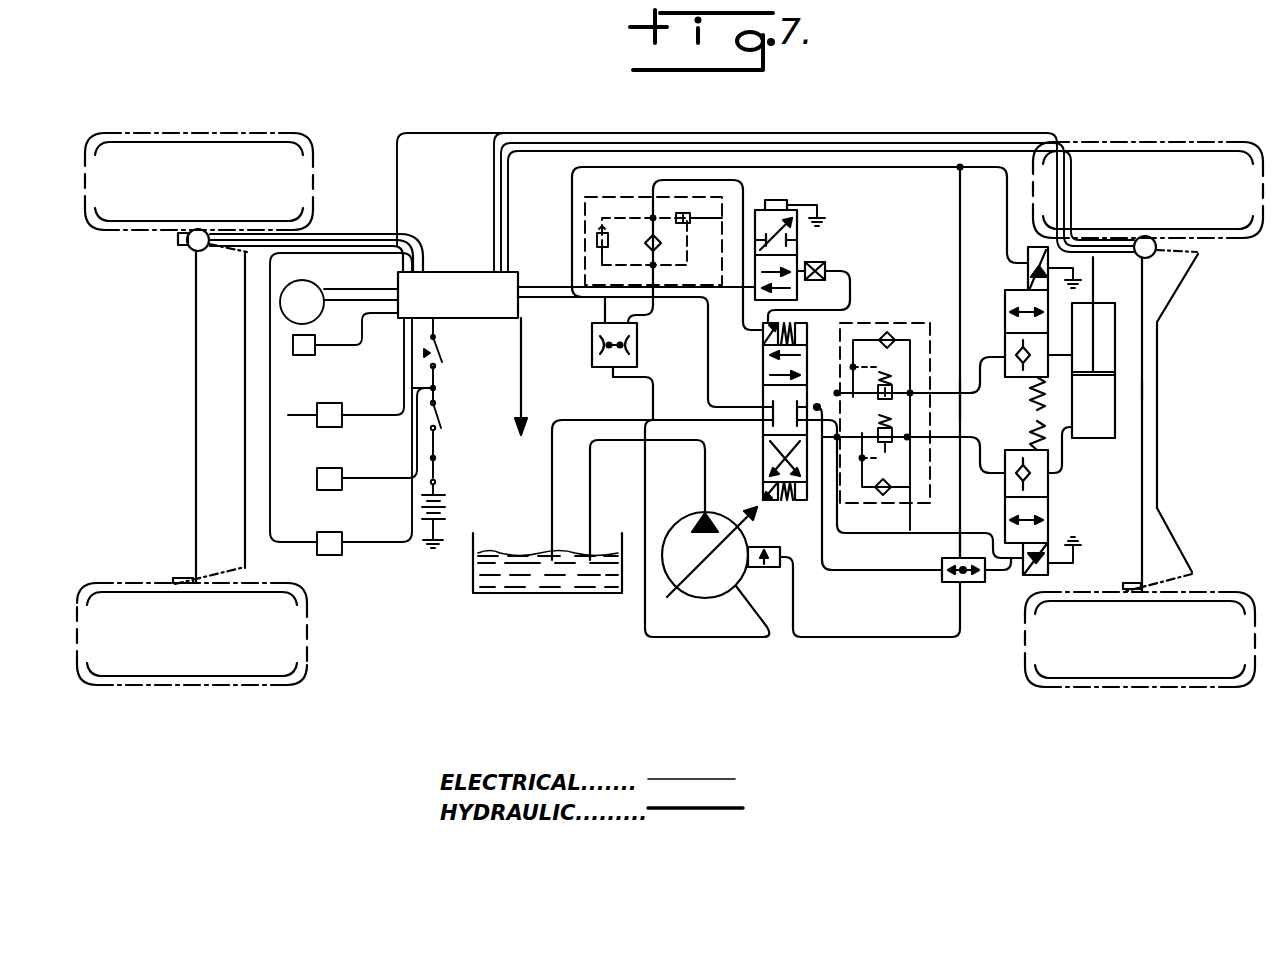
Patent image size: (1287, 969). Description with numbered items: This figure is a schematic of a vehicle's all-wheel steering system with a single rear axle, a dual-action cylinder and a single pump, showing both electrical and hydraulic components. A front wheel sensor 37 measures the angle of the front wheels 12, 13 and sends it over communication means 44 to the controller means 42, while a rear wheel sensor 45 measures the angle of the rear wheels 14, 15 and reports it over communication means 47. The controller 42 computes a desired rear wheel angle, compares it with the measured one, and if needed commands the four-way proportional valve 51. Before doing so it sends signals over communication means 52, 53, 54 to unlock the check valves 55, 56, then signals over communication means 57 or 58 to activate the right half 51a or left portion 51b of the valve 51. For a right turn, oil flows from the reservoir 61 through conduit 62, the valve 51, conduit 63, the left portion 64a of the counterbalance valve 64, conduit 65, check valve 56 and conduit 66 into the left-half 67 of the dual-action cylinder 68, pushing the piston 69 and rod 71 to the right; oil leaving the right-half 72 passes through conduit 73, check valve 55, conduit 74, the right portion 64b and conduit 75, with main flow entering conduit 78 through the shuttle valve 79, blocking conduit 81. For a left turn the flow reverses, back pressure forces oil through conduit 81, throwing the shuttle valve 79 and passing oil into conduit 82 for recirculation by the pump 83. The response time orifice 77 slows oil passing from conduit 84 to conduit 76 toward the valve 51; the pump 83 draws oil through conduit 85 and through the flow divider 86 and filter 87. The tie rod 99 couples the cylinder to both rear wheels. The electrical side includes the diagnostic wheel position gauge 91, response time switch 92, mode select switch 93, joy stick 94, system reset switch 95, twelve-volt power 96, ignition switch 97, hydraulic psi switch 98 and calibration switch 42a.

The front wheel 12 is at (238, 133).
The front wheel 13 is at (218, 675).
The rear wheel 14 is at (1178, 150).
The rear wheel 15 is at (1158, 675).
The front wheel sensor 37 is at (182, 254).
The controller means 42 is at (483, 270).
The calibration switch 42a is at (303, 355).
The communication means 44 is at (375, 233).
The rear wheel sensor 45 is at (1180, 258).
The communication means 47 is at (995, 140).
The four-way proportional valve 51 is at (763, 365).
The right half of four-way valve 51a is at (812, 330).
The left portion of four-way valve 51b is at (763, 496).
The communication means 52 is at (905, 170).
The communication means 53 is at (1003, 200).
The communication means 54 is at (958, 250).
The check valve 55 is at (1005, 290).
The check valve 56 is at (1050, 505).
The communication means 57 is at (556, 287).
The communication means 58 is at (552, 304).
The reservoir 61 is at (588, 595).
The conduit 62 is at (605, 420).
The conduit 63 is at (832, 534).
The counterbalance valve 64 is at (905, 322).
The left portion of counterbalance valve 64a is at (893, 500).
The right portion of counterbalance valve 64b is at (900, 338).
The conduit 65 is at (975, 482).
The conduit 66 is at (1062, 462).
The left-half of dual-action cylinder 67 is at (1105, 420).
The dual-action cylinder 68 is at (1100, 425).
The piston 69 is at (1117, 390).
The rod 71 is at (1095, 345).
The right-half of dual-action cylinder 72 is at (1110, 356).
The conduit 73 is at (1022, 413).
The conduit 74 is at (978, 366).
The conduit 75 is at (825, 402).
The conduit 76 is at (848, 286).
The response time orifice 77 is at (782, 205).
The conduit 78 is at (900, 570).
The shuttle valve 79 is at (957, 582).
The conduit 81 is at (993, 574).
The conduit 82 is at (878, 642).
The pump 83 is at (700, 512).
The conduit 84 is at (690, 176).
The conduit 85 is at (730, 640).
The flow divider 86 is at (637, 345).
The filter 87 is at (620, 200).
The diagnostic wheel position gauge 91 is at (314, 280).
The response time switch 92 is at (325, 555).
The mode select switch 93 is at (332, 490).
The joy stick 94 is at (332, 427).
The system reset switch 95 is at (426, 484).
The 12-volt power 96 is at (445, 512).
The ignition switch 97 is at (443, 420).
The hydraulic psi switch 98 is at (442, 355).
The tie rod 99 is at (1176, 546).